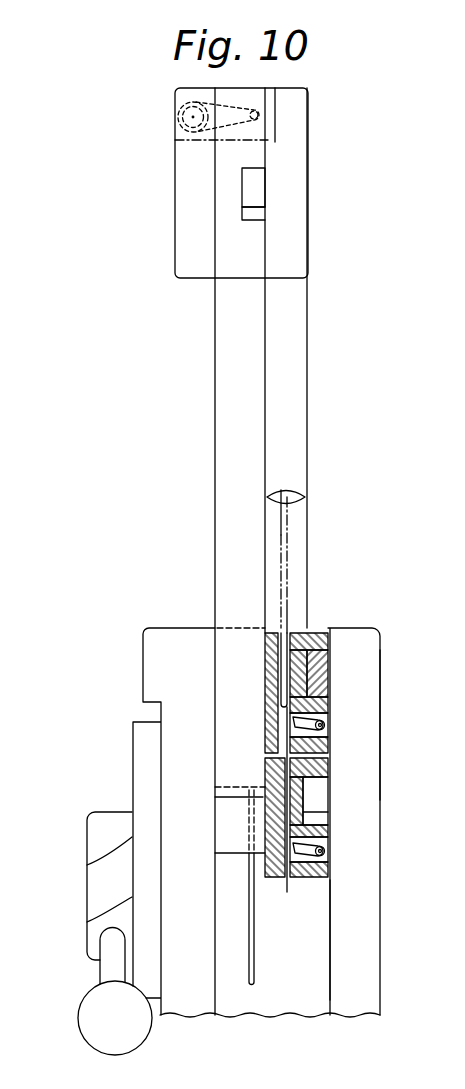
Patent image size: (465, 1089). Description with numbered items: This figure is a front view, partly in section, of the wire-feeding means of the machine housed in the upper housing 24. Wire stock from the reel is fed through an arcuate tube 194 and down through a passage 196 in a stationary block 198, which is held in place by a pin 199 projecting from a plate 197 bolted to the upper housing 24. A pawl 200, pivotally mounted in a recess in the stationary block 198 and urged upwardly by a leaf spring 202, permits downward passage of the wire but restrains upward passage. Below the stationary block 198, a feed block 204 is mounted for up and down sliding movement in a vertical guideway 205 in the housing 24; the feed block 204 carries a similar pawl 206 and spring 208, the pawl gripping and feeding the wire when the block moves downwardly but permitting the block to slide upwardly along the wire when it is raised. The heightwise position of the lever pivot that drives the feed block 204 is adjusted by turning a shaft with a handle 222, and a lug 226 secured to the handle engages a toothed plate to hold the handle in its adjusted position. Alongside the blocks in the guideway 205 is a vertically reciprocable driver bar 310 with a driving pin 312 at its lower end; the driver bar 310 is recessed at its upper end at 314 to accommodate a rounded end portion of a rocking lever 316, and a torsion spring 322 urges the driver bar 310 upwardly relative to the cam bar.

The upper housing 24 is at (175, 760).
The arcuate tube 194 is at (298, 465).
The passage 196 is at (290, 628).
The plate 197 is at (380, 730).
The stationary block 198 is at (330, 645).
The pin 199 is at (330, 677).
The pawl 200 is at (328, 717).
The leaf spring 202 is at (308, 729).
The feed block 204 is at (320, 833).
The vertical guideway 205 is at (322, 919).
The pawl 206 is at (326, 851).
The spring 208 is at (322, 866).
The handle 222 is at (100, 968).
The lug 226 is at (132, 770).
The driver bar 310 is at (215, 425).
The driving pin 312 is at (255, 943).
The recess 314 is at (255, 218).
The rocking lever 316 is at (255, 188).
The torsion spring 322 is at (230, 100).